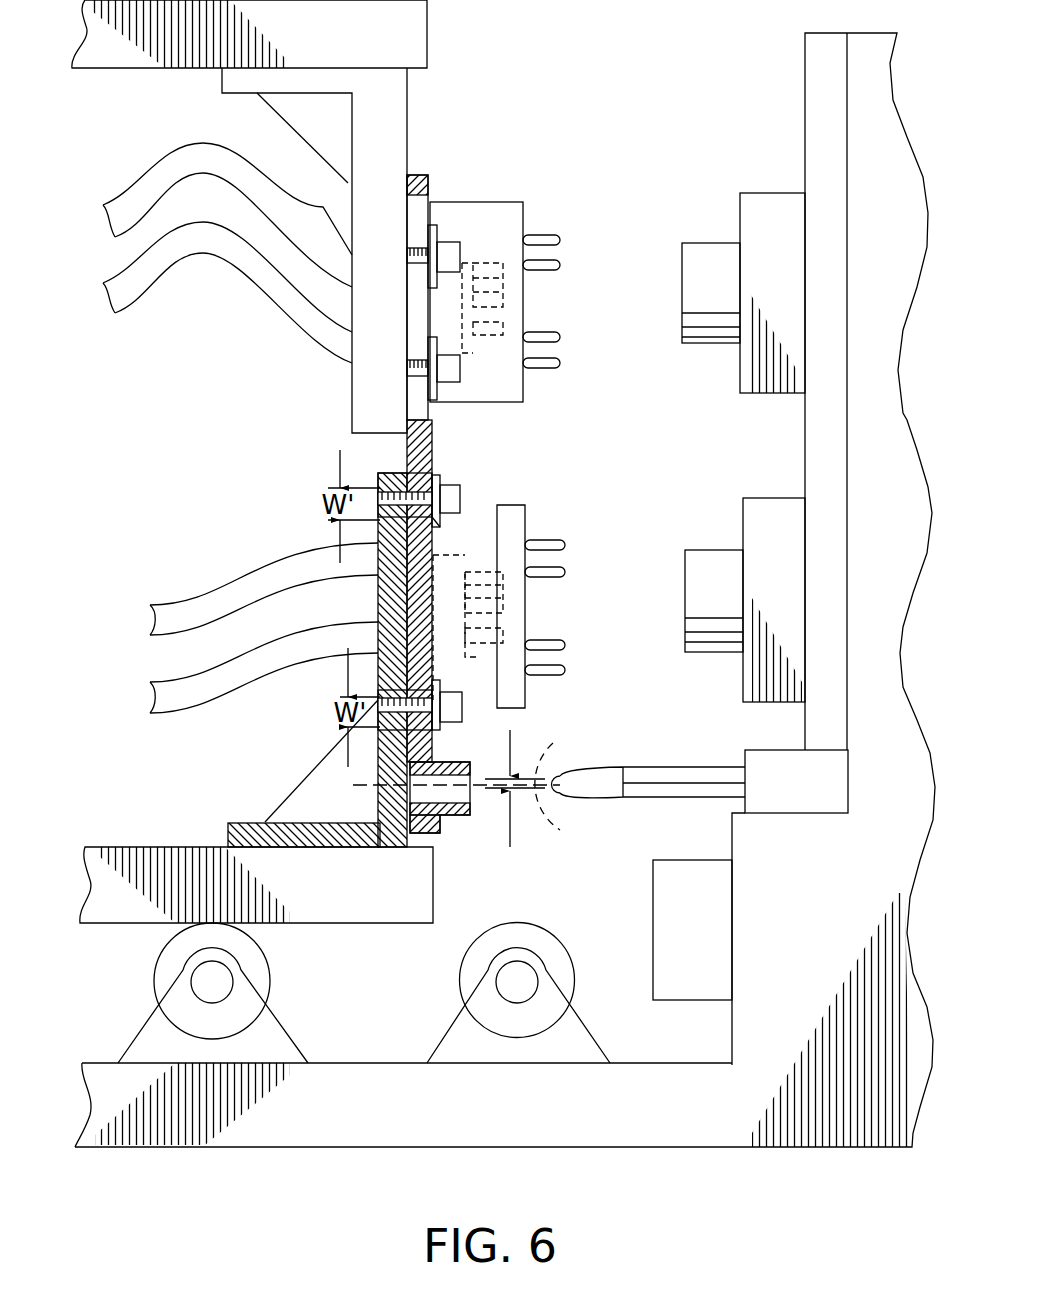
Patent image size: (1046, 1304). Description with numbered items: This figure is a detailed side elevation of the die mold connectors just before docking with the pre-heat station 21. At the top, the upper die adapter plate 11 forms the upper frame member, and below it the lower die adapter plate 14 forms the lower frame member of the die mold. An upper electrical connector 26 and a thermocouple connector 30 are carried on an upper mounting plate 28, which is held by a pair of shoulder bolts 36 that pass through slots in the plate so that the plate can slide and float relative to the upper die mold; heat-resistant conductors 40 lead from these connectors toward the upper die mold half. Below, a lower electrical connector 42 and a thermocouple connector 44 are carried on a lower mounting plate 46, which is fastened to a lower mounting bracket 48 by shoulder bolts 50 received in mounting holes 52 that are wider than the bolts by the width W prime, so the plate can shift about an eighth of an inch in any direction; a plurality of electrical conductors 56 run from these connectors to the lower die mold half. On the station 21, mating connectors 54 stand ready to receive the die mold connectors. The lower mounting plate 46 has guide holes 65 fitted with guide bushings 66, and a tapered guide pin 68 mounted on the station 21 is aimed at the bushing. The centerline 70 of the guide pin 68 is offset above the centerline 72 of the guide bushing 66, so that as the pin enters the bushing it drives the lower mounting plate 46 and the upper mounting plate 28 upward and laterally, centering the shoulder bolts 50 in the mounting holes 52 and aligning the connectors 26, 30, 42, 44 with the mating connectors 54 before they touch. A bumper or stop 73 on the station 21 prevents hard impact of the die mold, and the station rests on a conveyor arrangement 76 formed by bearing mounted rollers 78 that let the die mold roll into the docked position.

The upper die adapter plate 11 is at (380, 51).
The lower die adapter plate 14 is at (348, 903).
The pre-heat station 21 is at (805, 63).
The upper electrical connector 26 is at (500, 295).
The upper mounting plate 28 is at (420, 176).
The thermocouple connector 30 is at (512, 215).
The shoulder bolts 36 is at (448, 245).
The conductors 40 is at (290, 332).
The lower electrical connector 42 is at (507, 600).
The thermocouple connector 44 is at (520, 512).
The lower mounting plate 46 is at (430, 672).
The lower mounting bracket 48 is at (378, 606).
The shoulder bolts 50 is at (453, 482).
The mounting holes 52 is at (432, 520).
The mating connectors 54 is at (755, 245).
The electrical conductors 56 is at (277, 568).
The guide holes 65 is at (420, 797).
The guide bushings 66 is at (455, 830).
The tapered guide pins 68 is at (652, 765).
The centerlines of guide pins 70 is at (573, 745).
The centerlines of guide bushings 72 is at (558, 828).
The bumper or stop 73 is at (653, 917).
The conveyor arrangement 76 is at (410, 1118).
The bearing mounted rollers 78 is at (262, 962).